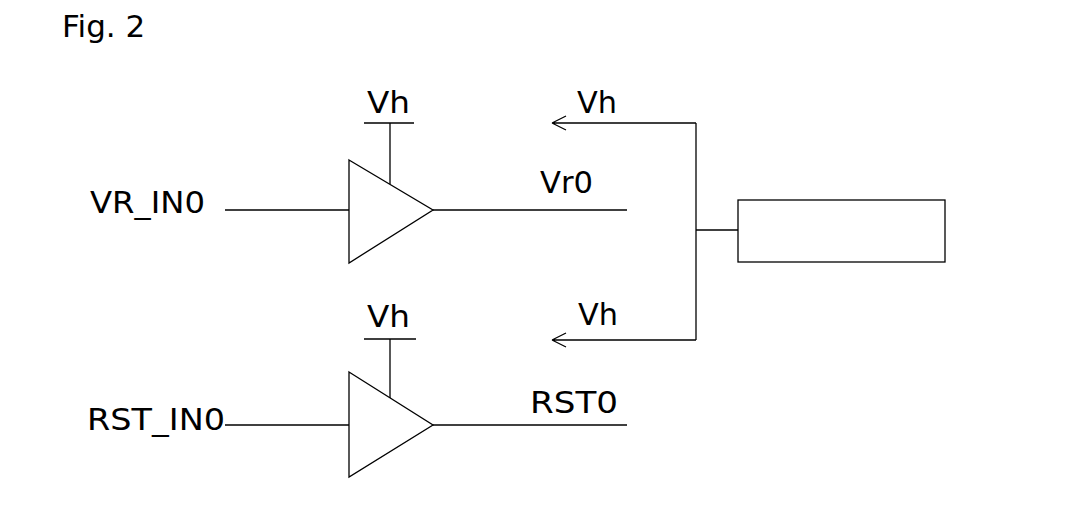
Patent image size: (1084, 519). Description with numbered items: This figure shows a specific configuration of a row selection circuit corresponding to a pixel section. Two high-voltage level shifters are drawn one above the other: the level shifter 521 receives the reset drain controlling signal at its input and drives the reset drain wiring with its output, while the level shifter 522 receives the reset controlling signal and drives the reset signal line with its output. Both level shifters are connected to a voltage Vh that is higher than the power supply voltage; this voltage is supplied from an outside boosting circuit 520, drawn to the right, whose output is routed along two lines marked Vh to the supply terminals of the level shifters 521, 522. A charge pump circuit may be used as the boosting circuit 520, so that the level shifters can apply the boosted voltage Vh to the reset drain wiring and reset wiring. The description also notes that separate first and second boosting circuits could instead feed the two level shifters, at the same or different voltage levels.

The boosting circuit 520 is at (836, 200).
The level shifter 521 is at (349, 197).
The level shifter 522 is at (349, 412).